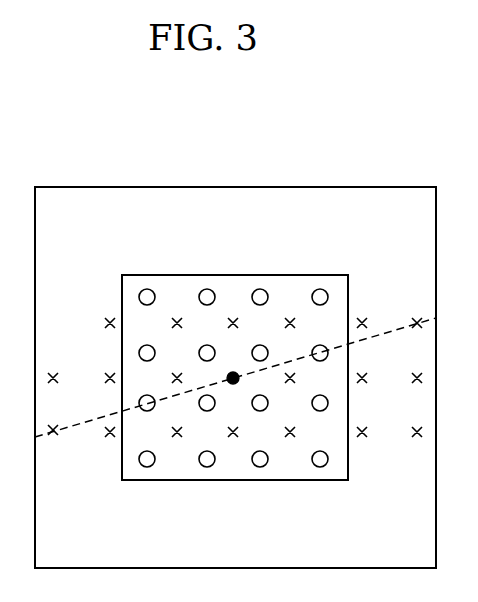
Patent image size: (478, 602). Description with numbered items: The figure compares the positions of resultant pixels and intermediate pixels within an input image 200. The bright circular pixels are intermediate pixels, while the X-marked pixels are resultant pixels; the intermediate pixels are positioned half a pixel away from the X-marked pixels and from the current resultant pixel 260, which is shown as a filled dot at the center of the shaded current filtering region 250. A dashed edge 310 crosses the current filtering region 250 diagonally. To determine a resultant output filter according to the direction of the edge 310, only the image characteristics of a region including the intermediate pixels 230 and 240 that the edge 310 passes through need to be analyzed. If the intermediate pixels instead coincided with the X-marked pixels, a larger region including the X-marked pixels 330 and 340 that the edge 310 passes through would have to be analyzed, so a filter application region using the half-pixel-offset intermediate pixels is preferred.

The input image 200 is at (133, 187).
The current filtering region 250 is at (234, 290).
The edge 310 is at (393, 332).
The X-marked pixel 330 is at (415, 327).
The intermediate pixel 230 is at (322, 361).
The intermediate pixel 240 is at (145, 411).
The current resultant pixel 260 is at (232, 384).
The X-marked pixel 340 is at (53, 435).